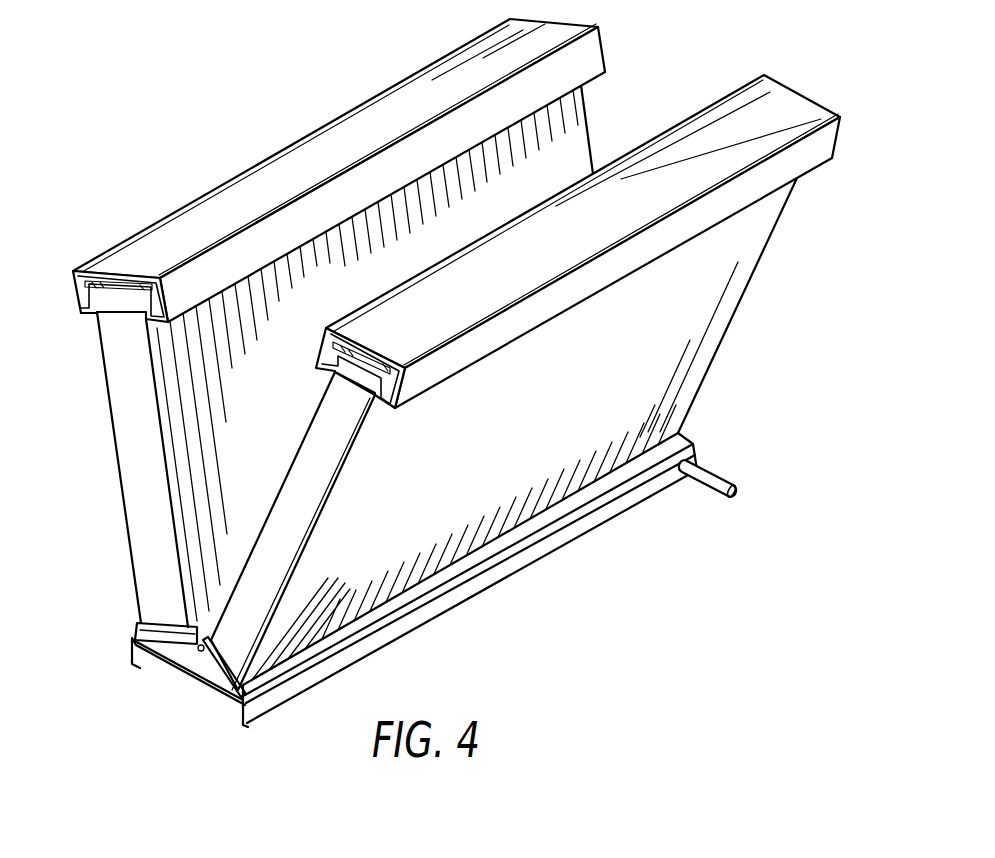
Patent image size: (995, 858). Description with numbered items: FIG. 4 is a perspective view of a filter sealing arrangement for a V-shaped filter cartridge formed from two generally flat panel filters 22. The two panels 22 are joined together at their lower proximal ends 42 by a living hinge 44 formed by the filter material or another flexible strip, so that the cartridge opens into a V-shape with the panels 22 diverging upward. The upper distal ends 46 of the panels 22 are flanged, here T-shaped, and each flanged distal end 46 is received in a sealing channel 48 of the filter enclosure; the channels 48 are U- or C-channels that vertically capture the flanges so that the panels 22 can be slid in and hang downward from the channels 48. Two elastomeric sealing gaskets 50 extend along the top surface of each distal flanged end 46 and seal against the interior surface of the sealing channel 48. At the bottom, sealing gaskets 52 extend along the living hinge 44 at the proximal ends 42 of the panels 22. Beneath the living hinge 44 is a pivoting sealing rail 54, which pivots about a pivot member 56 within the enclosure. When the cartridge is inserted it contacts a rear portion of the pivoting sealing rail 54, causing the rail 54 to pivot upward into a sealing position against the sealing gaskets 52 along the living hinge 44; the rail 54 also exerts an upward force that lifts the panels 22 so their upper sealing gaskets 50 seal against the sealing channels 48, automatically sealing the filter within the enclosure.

The panel filter 22 is at (590, 122).
The proximal end 42 is at (406, 588).
The living hinge 44 is at (178, 647).
The distal end 46 is at (449, 354).
The sealing channel 48 is at (603, 40).
The sealing gasket 50 is at (142, 285).
The sealing gasket 52 is at (138, 645).
The pivoting sealing rail 54 is at (467, 606).
The pivot member 56 is at (717, 474).